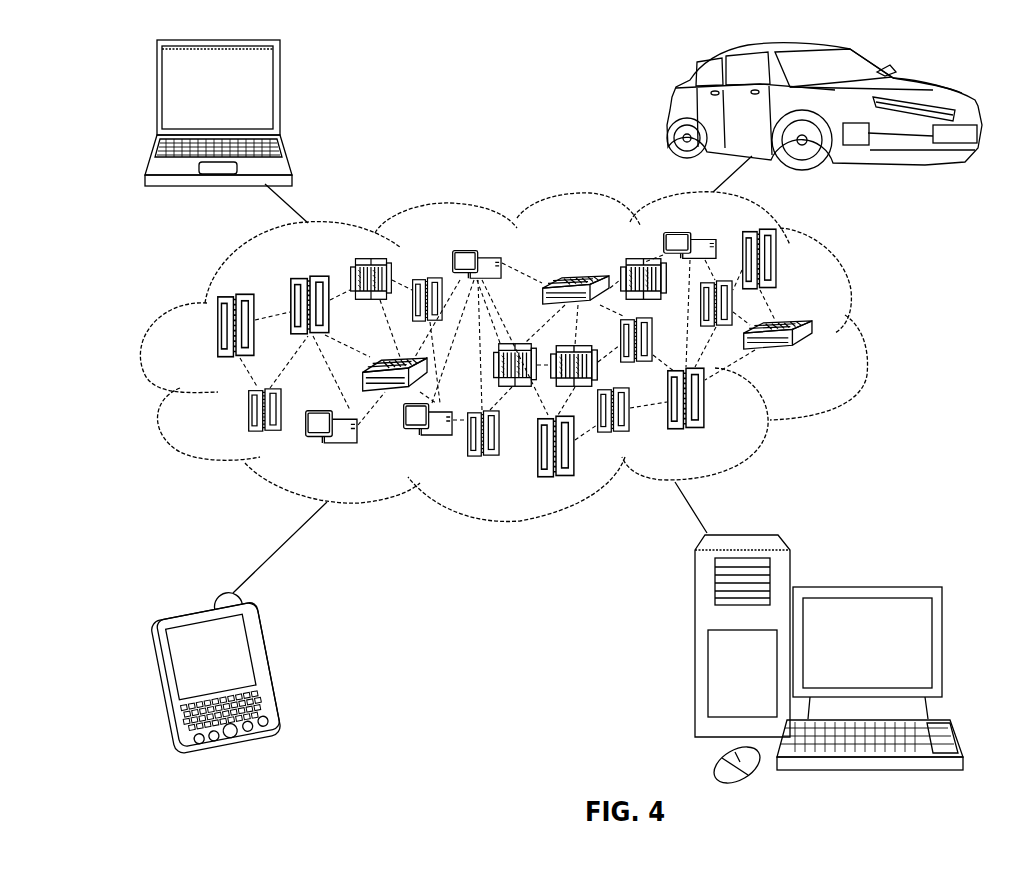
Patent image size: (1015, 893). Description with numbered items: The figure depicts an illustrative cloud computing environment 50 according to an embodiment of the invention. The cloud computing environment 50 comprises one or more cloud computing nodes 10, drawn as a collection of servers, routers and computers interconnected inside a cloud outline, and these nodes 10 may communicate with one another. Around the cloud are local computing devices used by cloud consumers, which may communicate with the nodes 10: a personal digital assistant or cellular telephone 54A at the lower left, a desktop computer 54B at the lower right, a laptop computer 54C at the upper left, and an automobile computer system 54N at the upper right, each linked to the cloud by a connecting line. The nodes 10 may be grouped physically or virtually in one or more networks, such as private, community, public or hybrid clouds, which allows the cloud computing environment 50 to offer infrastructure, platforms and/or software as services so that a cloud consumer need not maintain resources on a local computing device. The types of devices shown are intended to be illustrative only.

The cloud computing node 10 is at (813, 360).
The cloud computing environment 50 is at (866, 335).
The personal digital assistant or cellular telephone 54A is at (268, 668).
The desktop computer 54B is at (863, 587).
The laptop computer 54C is at (280, 97).
The automobile computer system 54N is at (672, 110).